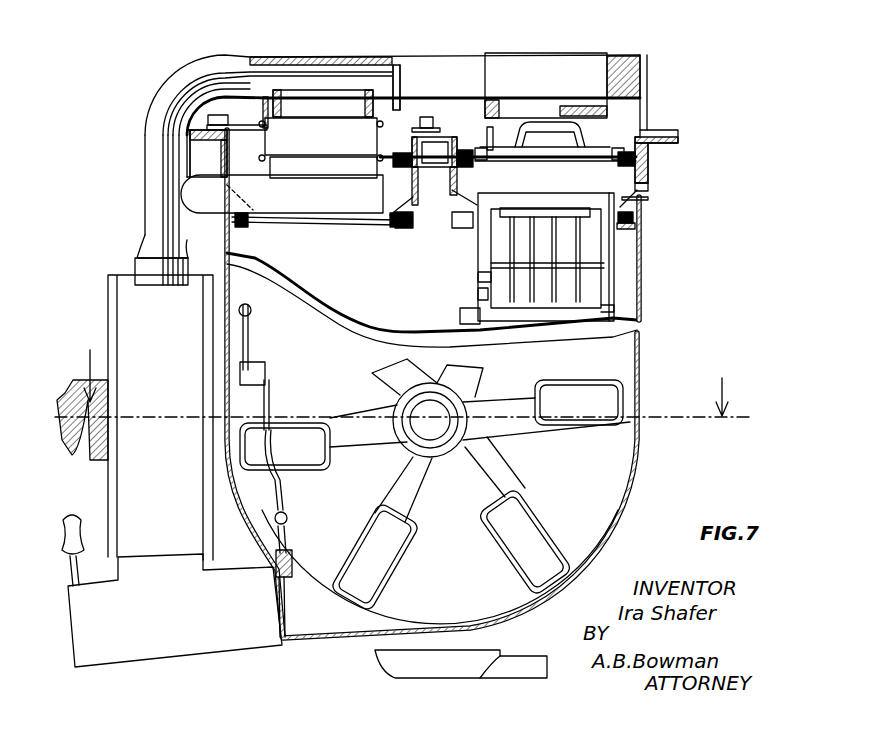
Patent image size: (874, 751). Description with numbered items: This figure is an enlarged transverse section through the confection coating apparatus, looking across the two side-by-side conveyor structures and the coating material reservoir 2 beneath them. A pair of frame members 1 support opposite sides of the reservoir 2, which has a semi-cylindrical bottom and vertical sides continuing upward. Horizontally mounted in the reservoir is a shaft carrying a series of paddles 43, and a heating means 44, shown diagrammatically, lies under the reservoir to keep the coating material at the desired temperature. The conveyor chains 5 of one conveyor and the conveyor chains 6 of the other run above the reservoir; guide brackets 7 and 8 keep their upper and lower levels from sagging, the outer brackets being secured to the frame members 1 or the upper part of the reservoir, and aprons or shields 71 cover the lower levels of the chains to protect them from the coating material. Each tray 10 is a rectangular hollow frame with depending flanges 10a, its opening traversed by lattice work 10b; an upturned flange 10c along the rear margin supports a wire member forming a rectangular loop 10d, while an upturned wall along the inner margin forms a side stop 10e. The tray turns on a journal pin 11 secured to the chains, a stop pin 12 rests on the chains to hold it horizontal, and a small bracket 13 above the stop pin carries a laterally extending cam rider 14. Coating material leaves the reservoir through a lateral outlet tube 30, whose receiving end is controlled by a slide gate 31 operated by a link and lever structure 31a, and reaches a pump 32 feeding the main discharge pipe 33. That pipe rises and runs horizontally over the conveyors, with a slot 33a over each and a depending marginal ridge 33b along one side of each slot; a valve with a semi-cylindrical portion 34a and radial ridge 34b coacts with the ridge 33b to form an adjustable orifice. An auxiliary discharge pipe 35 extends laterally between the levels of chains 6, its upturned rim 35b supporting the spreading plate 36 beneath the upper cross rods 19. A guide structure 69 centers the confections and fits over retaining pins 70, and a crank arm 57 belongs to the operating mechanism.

The frame members 1 is at (187, 150).
The coating material reservoir 2 is at (640, 385).
The conveyor chains 5 is at (666, 214).
The conveyor chains 6 is at (400, 105).
The conveyor guide brackets 7 is at (665, 238).
The conveyor guide brackets 8 is at (240, 227).
The tray 10 is at (607, 296).
The depending flanges 10a is at (617, 157).
The lattice work 10b is at (540, 237).
The upturned flange 10c is at (513, 217).
The rectangular loop 10d is at (540, 125).
The side stop 10e is at (490, 127).
The journal pin 11 is at (593, 157).
The stop pin 12 is at (460, 312).
The bracket 13 is at (475, 293).
The cam rider 14 is at (463, 333).
The cross rods 19 is at (321, 139).
The outlet tube 30 is at (222, 630).
The slide gate 31 is at (290, 548).
The link and lever structure 31a is at (287, 512).
The pump 32 is at (156, 447).
The main discharge pipe 33 is at (140, 232).
The slot 33a is at (328, 97).
The marginal ridge 33b is at (577, 108).
The semi-cylindrical portion 34a is at (258, 56).
The radially extending ridge 34b is at (302, 107).
The auxiliary discharge pipe 35 is at (302, 193).
The rim 35b is at (357, 177).
The spreading plate 36 is at (352, 225).
The paddles 43 is at (507, 532).
The heating means 44 is at (375, 660).
The crank arm 57 is at (648, 162).
The guide structure 69 is at (257, 137).
The retaining pins 70 is at (212, 116).
The conveyor chain aprons or shields 71 is at (245, 228).